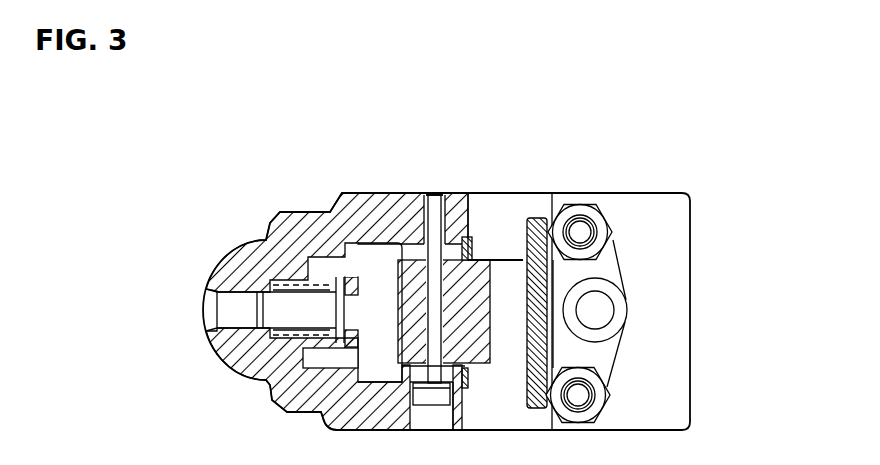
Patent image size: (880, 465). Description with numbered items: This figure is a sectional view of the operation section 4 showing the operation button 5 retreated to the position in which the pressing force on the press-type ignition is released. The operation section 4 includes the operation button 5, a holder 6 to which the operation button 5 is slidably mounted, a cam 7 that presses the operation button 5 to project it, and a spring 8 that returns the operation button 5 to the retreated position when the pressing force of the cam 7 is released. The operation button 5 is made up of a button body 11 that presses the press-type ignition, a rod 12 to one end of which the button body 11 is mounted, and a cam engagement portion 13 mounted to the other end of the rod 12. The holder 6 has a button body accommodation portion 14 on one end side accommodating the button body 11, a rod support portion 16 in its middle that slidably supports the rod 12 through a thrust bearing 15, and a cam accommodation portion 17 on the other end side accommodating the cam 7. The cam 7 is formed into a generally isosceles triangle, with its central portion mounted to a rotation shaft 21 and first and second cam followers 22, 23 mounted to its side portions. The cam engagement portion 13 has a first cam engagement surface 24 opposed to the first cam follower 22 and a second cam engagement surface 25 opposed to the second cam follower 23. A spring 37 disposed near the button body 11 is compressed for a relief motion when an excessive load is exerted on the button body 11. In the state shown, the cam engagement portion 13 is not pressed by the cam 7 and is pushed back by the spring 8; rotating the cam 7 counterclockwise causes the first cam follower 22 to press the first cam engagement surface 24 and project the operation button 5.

The operation section 4 is at (266, 158).
The operation button 5 is at (199, 289).
The holder 6 is at (352, 193).
The cam 7 is at (620, 255).
The spring 8 is at (488, 258).
The button body 11 is at (228, 283).
The rod 12 is at (237, 302).
The cam engagement portion 13 is at (539, 210).
The button body accommodation portion 14 is at (375, 222).
The thrust bearing 15 is at (412, 225).
The rod support portion 16 is at (465, 237).
The cam accommodation portion 17 is at (512, 212).
The rotation shaft 21 is at (600, 310).
The first cam follower 22 is at (583, 203).
The second cam follower 23 is at (598, 400).
The first cam engagement surface 24 is at (545, 284).
The second cam engagement surface 25 is at (552, 355).
The spring 37 is at (288, 280).